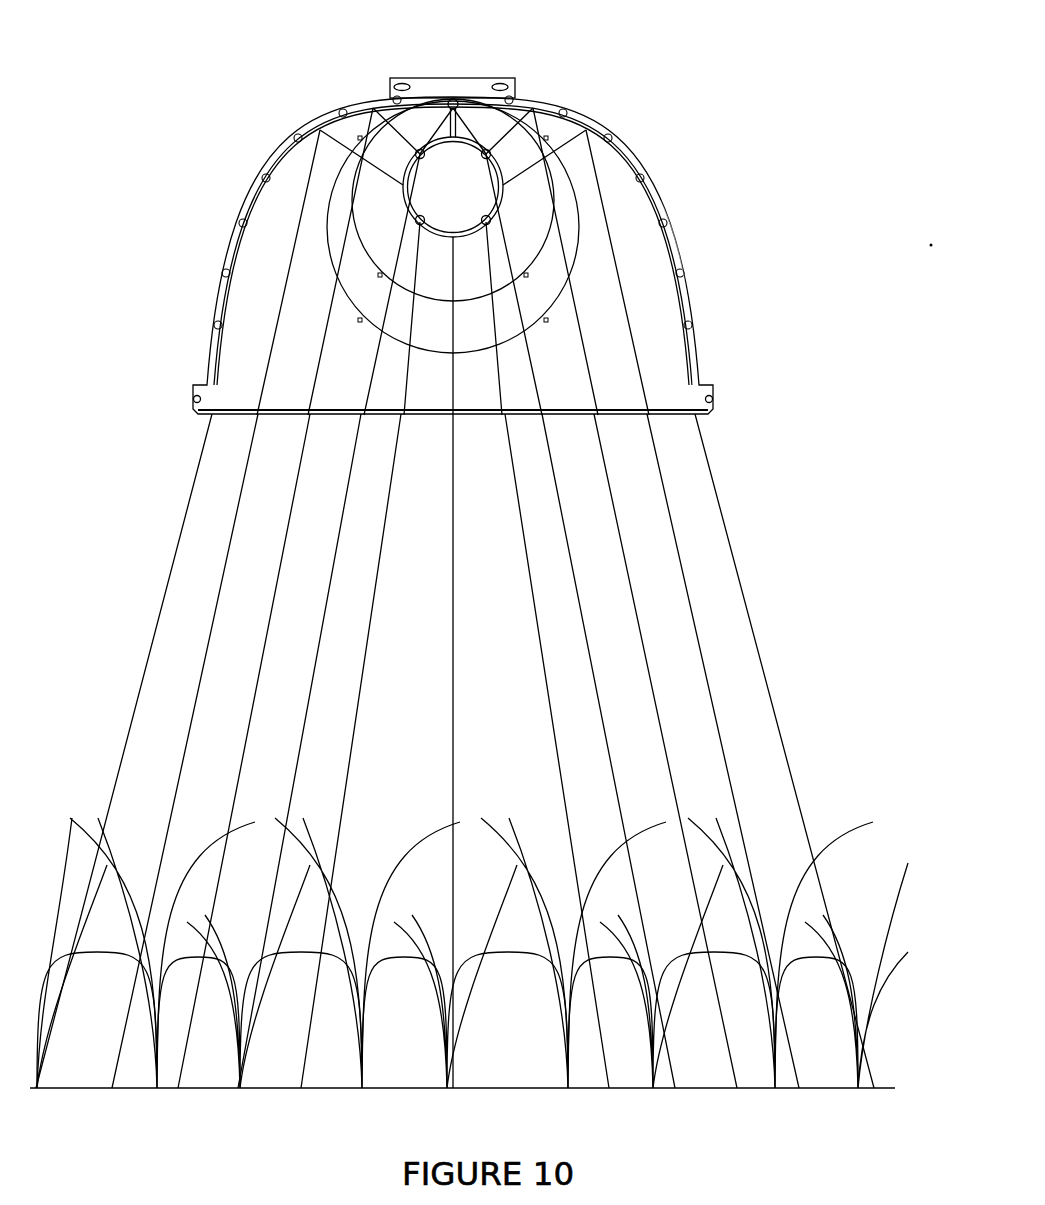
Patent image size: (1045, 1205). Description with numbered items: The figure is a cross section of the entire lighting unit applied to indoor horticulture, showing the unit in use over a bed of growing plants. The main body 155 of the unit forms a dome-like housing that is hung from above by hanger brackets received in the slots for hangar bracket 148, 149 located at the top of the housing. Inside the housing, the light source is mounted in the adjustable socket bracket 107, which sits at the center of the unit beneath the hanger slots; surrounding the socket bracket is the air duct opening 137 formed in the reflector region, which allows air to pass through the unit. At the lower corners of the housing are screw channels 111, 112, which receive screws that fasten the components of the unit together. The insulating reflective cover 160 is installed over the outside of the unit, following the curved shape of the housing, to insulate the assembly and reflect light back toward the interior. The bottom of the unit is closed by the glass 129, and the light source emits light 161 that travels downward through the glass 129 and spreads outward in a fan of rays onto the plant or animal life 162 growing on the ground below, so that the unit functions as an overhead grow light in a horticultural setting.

The adjustable socket bracket 107 is at (500, 178).
The screw channel 111 is at (195, 398).
The screw channel 112 is at (715, 398).
The glass 129 is at (283, 420).
The air duct opening 137 is at (543, 283).
The slot for hangar bracket 148 is at (402, 80).
The slot for hangar bracket 149 is at (500, 80).
The main body 155 is at (677, 257).
The insulating reflective cover 160 is at (547, 100).
The light 161 is at (757, 622).
The plant or animal life 162 is at (863, 1008).